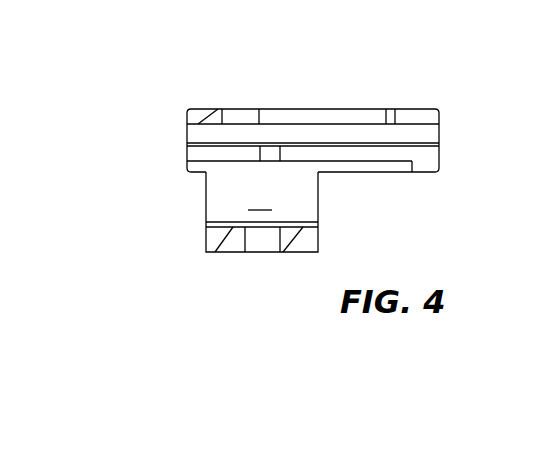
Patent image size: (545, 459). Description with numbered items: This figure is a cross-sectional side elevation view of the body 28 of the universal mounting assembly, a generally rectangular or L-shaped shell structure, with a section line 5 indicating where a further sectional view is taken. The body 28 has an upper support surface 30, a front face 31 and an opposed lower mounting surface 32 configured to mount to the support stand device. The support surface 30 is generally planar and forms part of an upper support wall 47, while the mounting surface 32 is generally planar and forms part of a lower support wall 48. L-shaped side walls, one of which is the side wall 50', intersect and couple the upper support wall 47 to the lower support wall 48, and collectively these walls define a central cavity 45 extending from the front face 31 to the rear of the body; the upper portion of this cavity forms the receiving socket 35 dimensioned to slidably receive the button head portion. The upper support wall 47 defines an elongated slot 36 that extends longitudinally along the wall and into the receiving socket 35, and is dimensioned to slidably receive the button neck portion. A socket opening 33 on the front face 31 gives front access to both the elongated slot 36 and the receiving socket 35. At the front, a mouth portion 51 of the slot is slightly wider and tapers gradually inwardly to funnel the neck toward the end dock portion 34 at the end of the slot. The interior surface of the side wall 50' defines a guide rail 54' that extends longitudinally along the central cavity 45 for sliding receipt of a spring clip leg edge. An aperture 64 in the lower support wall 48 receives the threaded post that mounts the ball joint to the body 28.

The support surface 30 is at (323, 108).
The front face 31 is at (433, 160).
The socket opening 33 is at (433, 133).
The end dock portion 34 is at (243, 117).
The receiving socket 35 is at (267, 132).
The elongated slot 36 is at (368, 115).
The upper support wall 47 is at (190, 112).
The front mouth portion 51 is at (412, 115).
The central cavity 45 is at (262, 212).
The lower support wall 48 is at (318, 235).
The body 28 is at (214, 250).
The mounting surface 32 is at (233, 253).
The aperture 64 is at (275, 253).
The side wall 50' is at (165, 201).
The guide rail 54' is at (159, 134).
The section line 5- 5 is at (170, 153).